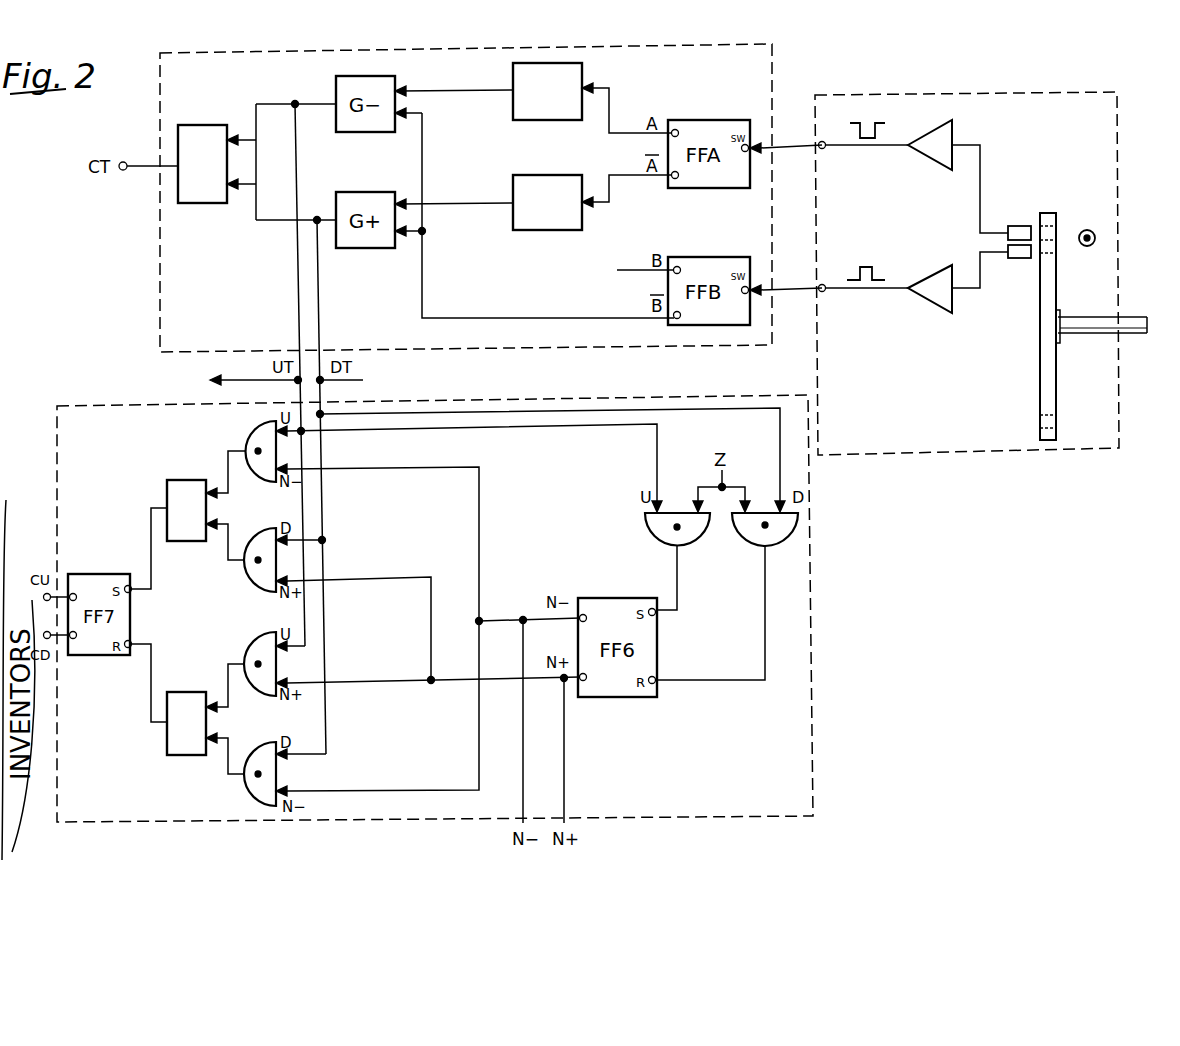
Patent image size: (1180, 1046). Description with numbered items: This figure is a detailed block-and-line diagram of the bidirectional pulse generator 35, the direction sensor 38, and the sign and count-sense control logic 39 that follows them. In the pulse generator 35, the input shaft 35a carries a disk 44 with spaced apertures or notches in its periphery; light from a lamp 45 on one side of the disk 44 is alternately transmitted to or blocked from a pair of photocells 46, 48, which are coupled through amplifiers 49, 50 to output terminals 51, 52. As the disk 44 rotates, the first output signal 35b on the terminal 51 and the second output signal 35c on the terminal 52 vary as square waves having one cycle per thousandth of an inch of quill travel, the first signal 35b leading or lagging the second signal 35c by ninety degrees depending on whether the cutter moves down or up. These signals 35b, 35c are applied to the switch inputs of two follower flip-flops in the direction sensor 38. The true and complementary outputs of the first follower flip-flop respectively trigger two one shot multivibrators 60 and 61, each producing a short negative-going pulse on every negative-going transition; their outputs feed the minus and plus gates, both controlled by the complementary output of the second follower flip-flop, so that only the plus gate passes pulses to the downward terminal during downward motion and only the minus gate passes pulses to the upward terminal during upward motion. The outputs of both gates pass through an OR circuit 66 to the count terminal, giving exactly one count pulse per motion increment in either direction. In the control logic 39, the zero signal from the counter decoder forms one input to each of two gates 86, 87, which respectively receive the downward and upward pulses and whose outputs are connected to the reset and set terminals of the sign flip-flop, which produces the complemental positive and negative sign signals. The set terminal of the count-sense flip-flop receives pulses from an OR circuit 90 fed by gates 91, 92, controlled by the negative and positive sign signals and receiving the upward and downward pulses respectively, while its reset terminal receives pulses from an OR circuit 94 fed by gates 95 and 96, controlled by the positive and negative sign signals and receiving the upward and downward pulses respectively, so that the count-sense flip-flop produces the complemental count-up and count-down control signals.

The direction sensor 38 is at (159, 125).
The OR circuit 66 is at (212, 125).
The one shot multivibrator 60 is at (532, 120).
The one shot multivibrator 61 is at (540, 230).
The bidirectional pulse generator 35 is at (985, 452).
The input shaft 35a is at (1092, 338).
The first output signal 35b is at (860, 122).
The second output signal 35c is at (858, 266).
The disk 44 is at (1040, 397).
The lamp 45 is at (1087, 230).
The photocell 46 is at (1018, 225).
The photocell 48 is at (1026, 259).
The amplifier 49 is at (937, 170).
The amplifier 50 is at (942, 313).
The output terminal 51 is at (824, 149).
The output terminal 52 is at (824, 292).
The counting control circuit 39 is at (814, 572).
The gate 86 is at (758, 541).
The gate 87 is at (660, 532).
The OR circuit 90 is at (188, 480).
The gate 91 is at (254, 428).
The gate 92 is at (257, 576).
The OR circuit 94 is at (167, 741).
The gate 95 is at (256, 640).
The gate 96 is at (256, 786).